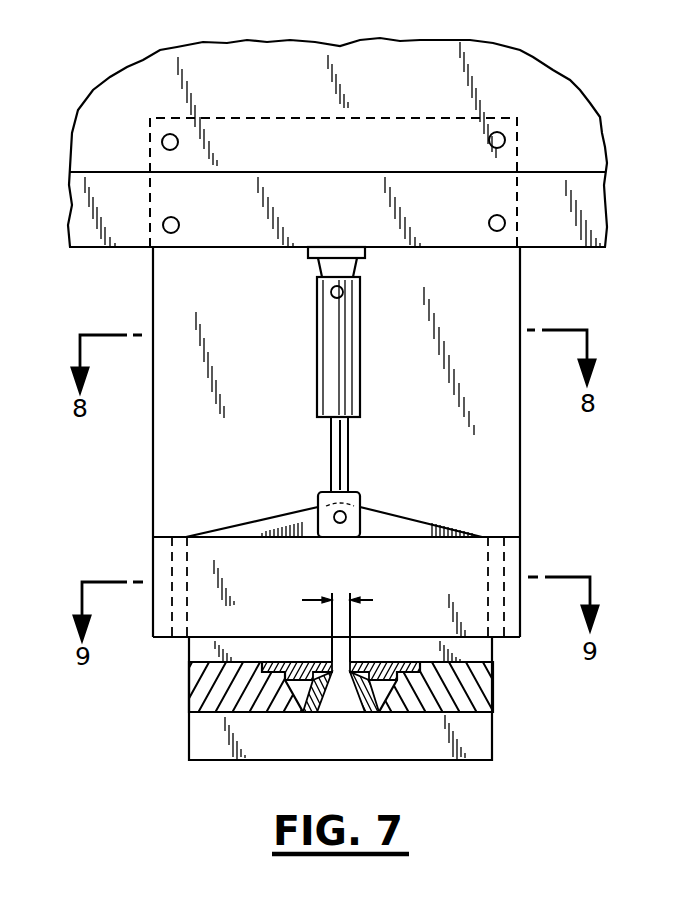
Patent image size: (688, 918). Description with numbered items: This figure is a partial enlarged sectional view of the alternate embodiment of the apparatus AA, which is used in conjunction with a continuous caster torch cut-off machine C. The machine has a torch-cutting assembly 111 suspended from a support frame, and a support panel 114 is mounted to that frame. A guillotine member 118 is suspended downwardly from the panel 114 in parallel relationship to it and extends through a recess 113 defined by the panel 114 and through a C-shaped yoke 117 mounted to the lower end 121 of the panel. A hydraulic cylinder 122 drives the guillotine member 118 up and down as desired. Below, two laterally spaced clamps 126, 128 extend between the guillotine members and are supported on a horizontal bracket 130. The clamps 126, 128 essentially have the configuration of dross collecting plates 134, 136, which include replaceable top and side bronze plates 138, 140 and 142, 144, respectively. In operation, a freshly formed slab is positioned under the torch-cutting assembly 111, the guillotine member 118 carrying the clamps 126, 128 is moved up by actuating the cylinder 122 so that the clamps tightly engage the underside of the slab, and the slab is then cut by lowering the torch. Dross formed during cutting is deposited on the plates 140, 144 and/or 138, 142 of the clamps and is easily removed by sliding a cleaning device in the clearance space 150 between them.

The continuous caster torch cut-off machine C is at (553, 56).
The torch-cutting assembly 111 is at (598, 136).
The support panel 114 is at (522, 286).
The hydraulic cylinder 122 is at (360, 379).
The C-shaped yoke 117 is at (355, 570).
The guillotine member 118 is at (412, 519).
The lower end of the panel 121 is at (521, 557).
The recess 113 is at (173, 543).
The apparatus AA is at (548, 479).
The clearance space 150 is at (373, 600).
The horizontal bracket 130 is at (207, 752).
The dross collecting plate 134 is at (190, 678).
The dross collecting plate 136 is at (484, 672).
The clamp 126 is at (188, 699).
The clamp 128 is at (490, 707).
The top bronze plate 138 is at (280, 660).
The top bronze plate 142 is at (402, 660).
The side bronze plate 140 is at (308, 714).
The side bronze plate 144 is at (372, 714).